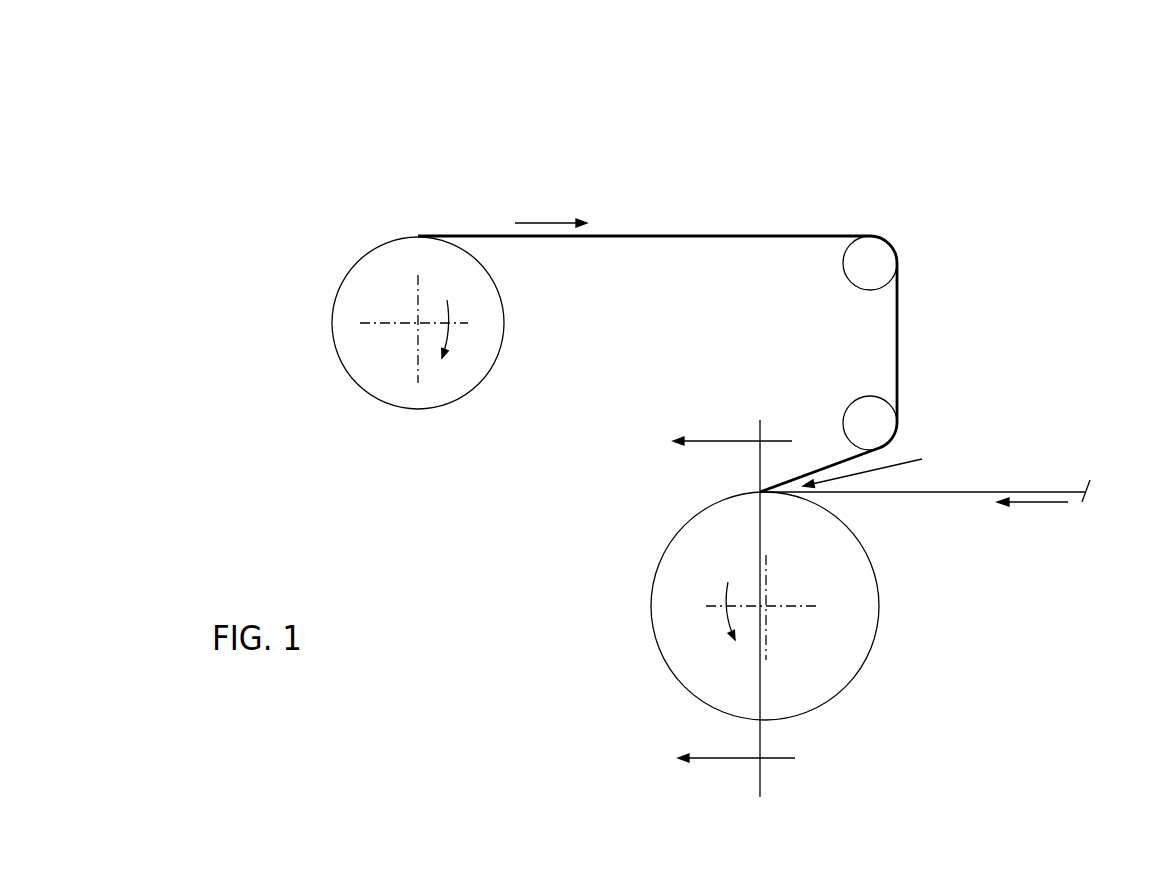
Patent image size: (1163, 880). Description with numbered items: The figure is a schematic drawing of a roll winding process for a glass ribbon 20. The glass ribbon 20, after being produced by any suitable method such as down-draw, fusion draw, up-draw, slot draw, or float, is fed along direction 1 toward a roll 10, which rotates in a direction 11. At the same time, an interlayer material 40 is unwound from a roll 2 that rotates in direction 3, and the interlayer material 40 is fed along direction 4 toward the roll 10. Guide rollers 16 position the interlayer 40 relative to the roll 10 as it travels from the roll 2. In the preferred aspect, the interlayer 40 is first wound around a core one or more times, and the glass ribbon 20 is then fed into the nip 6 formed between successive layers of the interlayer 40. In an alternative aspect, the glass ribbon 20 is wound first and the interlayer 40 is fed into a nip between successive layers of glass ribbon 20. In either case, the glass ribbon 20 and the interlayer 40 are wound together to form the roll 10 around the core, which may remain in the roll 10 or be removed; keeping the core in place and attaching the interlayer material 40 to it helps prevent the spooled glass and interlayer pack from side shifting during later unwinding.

The direction 1 is at (1032, 515).
The roll 2 is at (370, 372).
The direction 3 is at (450, 337).
The direction 4 is at (551, 214).
The nip 6 is at (872, 467).
The roll 10 is at (828, 652).
The direction 11 is at (727, 620).
The guide rollers 16 is at (873, 252).
The glass ribbon 20 is at (968, 490).
The interlayer material 40 is at (720, 237).